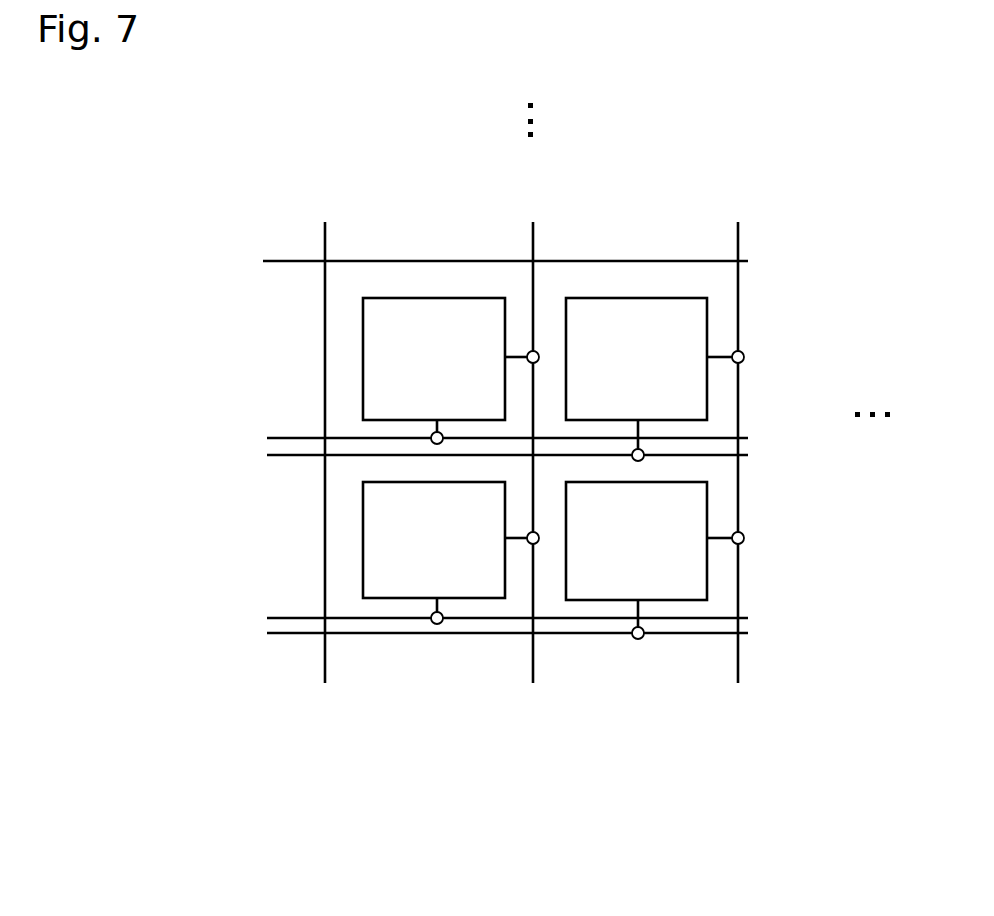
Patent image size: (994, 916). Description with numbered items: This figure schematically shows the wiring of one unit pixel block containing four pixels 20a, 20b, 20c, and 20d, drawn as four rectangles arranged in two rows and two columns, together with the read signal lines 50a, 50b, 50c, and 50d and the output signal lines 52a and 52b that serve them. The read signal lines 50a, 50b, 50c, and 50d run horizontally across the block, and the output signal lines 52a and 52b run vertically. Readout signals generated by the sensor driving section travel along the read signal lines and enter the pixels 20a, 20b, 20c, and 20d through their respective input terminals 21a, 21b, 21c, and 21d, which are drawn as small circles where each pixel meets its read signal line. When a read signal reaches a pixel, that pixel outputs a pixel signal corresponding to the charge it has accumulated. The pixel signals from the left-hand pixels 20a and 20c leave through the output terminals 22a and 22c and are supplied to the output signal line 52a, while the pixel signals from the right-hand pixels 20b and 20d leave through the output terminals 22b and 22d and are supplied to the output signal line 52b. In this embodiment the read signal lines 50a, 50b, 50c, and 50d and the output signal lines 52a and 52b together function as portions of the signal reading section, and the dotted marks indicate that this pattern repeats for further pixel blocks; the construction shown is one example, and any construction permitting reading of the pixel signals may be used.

The pixel 20a is at (386, 298).
The pixel 20b is at (665, 298).
The pixel 20c is at (385, 600).
The pixel 20d is at (683, 600).
The input terminal 21a is at (433, 455).
The input terminal 21b is at (645, 457).
The input terminal 21c is at (439, 632).
The input terminal 21d is at (642, 640).
The output terminal 22a is at (537, 351).
The output terminal 22b is at (742, 351).
The output terminal 22c is at (536, 545).
The output terminal 22d is at (742, 545).
The read signal line 50a is at (275, 433).
The read signal line 50b is at (267, 455).
The read signal line 50c is at (272, 618).
The read signal line 50d is at (268, 633).
The output signal line 52a is at (533, 683).
The output signal line 52b is at (738, 683).